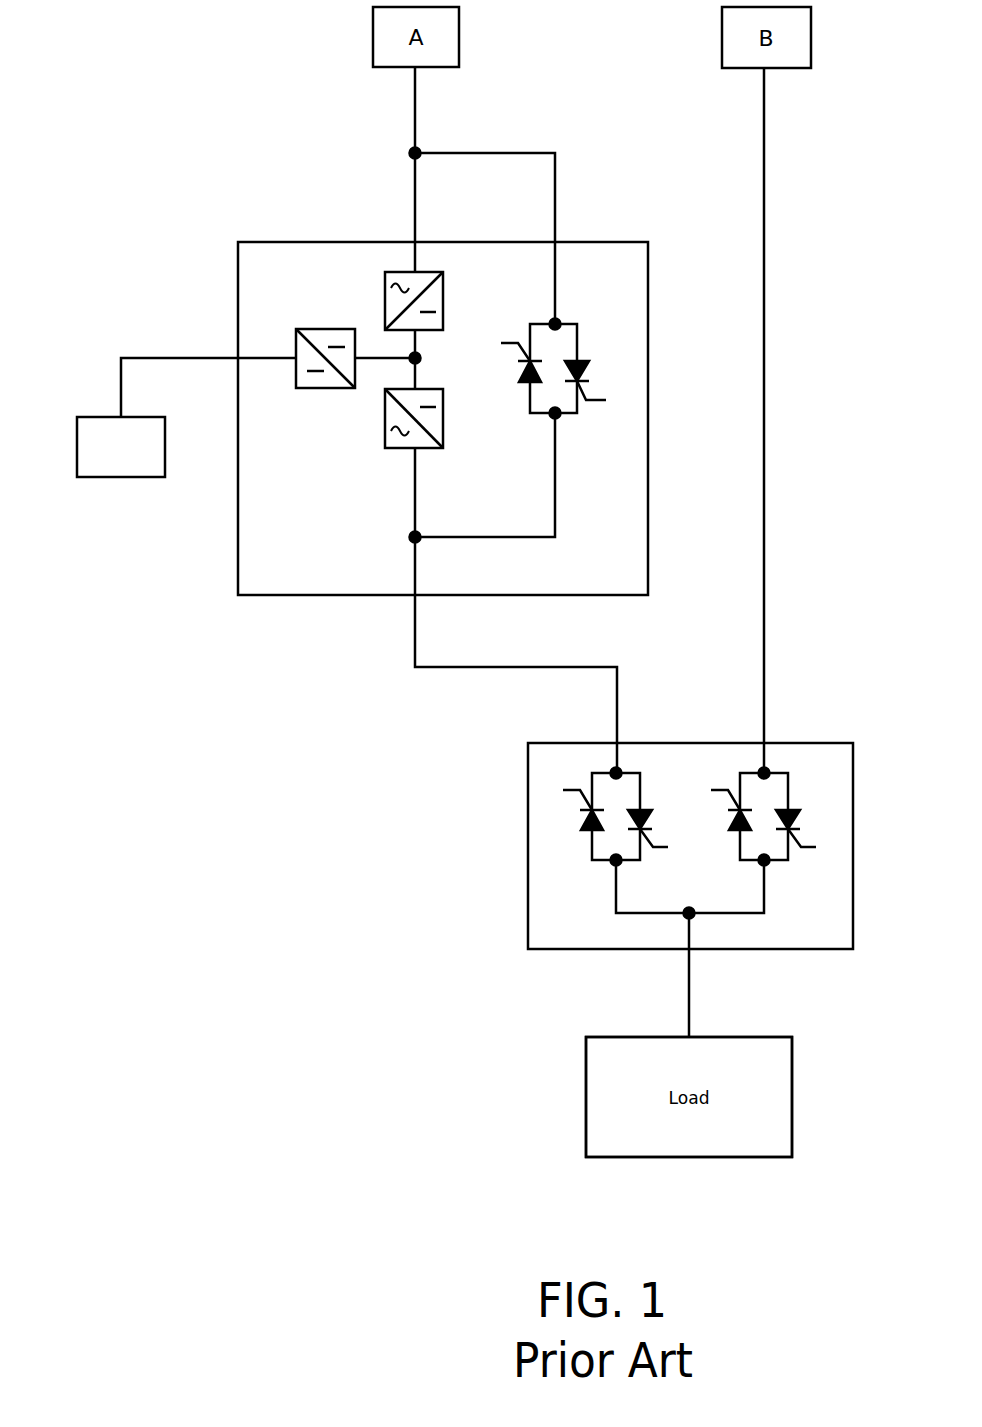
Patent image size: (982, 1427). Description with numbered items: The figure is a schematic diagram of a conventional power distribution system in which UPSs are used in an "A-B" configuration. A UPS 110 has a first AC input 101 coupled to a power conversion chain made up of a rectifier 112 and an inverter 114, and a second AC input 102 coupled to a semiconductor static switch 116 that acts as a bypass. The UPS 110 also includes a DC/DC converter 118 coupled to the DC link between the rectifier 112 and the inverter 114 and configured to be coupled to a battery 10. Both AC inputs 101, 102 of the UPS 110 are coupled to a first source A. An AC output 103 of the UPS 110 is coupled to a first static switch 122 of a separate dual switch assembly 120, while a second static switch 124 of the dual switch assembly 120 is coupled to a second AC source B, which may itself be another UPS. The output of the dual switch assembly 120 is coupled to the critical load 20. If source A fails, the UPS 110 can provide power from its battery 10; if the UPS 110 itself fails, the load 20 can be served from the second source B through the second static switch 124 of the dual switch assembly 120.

The battery 10 is at (121, 477).
The load 20 is at (689, 1157).
The first AC input 101 is at (396, 220).
The second AC input 102 is at (536, 220).
The AC output 103 is at (394, 615).
The UPS 110 is at (238, 418).
The rectifier 112 is at (385, 302).
The inverter 114 is at (443, 418).
The semiconductor static switch 116 is at (535, 449).
The DC/DC converter 118 is at (327, 388).
The dual switch assembly 120 is at (528, 845).
The first static switch 122 is at (598, 878).
The second static switch 124 is at (774, 878).